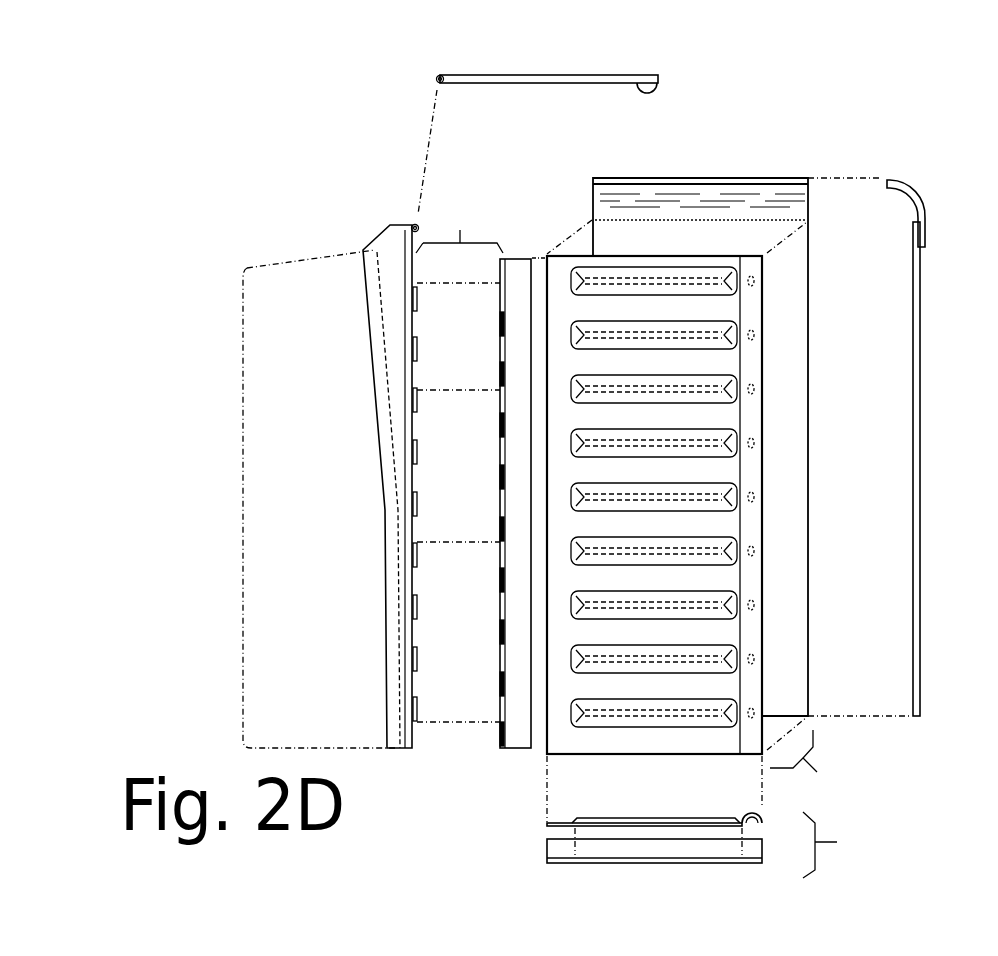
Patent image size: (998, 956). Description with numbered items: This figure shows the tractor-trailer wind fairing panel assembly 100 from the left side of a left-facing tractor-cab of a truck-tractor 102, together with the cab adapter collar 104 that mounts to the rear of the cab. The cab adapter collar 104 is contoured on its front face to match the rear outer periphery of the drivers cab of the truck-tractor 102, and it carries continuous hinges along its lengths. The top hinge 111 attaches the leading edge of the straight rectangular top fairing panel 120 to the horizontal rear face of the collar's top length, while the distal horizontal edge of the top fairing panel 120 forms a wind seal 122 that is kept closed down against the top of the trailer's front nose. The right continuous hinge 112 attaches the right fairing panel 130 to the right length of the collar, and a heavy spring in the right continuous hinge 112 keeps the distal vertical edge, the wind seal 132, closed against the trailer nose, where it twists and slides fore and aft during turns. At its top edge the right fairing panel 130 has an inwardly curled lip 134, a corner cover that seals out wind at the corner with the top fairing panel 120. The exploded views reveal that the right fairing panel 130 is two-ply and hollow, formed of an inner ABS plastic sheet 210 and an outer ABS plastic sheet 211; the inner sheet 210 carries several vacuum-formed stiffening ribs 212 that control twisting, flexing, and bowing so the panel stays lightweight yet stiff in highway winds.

The tractor-trailer wind fairing panel assembly 100 is at (365, 126).
The truck-tractor 102 is at (319, 499).
The cab adapter collar 104 is at (386, 238).
The top hinge 111 is at (412, 223).
The right continuous hinge 112 is at (500, 473).
The top fairing panel 120 is at (603, 53).
The wind seal 122 is at (647, 93).
The right fairing panel 130 is at (827, 804).
The wind seal 132 is at (753, 748).
The inwardly curled lip 134 is at (567, 212).
The inner ABS plastic sheet 210 is at (624, 555).
The outer ABS plastic sheet 211 is at (950, 312).
The stiffening ribs 212 is at (693, 483).